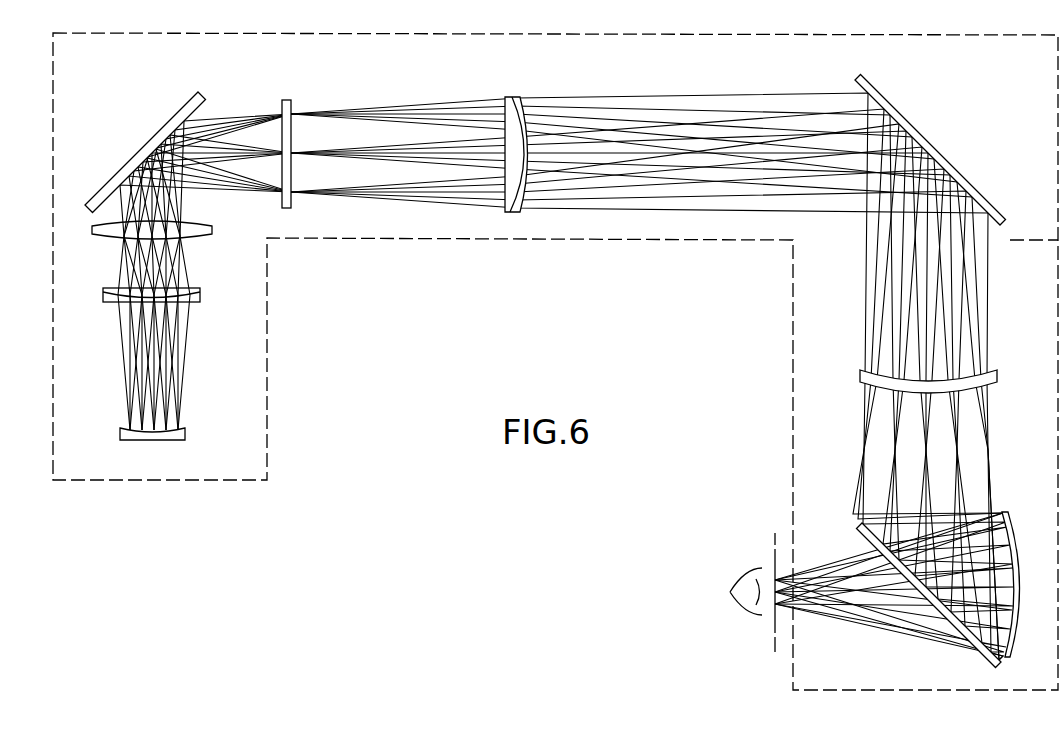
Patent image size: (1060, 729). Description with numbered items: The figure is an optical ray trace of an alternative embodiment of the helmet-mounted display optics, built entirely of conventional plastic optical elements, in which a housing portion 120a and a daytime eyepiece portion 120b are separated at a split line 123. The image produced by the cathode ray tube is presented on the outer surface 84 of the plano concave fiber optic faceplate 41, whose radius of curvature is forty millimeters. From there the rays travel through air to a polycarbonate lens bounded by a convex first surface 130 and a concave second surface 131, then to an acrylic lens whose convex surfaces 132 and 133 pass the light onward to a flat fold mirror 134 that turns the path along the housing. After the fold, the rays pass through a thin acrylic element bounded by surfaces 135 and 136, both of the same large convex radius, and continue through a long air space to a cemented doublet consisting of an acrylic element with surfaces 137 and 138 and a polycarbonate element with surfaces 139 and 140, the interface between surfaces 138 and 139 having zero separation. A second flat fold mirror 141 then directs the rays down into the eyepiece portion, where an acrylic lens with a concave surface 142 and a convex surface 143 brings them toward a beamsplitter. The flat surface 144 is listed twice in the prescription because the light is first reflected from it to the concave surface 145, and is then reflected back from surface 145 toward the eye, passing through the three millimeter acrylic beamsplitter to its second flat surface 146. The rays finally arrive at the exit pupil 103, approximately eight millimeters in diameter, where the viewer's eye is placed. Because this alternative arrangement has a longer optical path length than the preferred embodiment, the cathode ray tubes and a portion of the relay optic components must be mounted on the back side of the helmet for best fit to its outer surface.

The plano concave fiber optic faceplate 41 is at (138, 441).
The outer surface of fiber optic faceplate 84 is at (180, 430).
The exit pupil 103 is at (773, 552).
The housing portion 120a is at (418, 287).
The daytime eyepiece portion 120b is at (745, 377).
The split line 123 is at (1022, 242).
The convex first surface of polycarbonate lens 130 is at (118, 302).
The concave second surface of polycarbonate lens 131 is at (120, 287).
The convex first surface of acrylic lens 132 is at (200, 238).
The convex second surface of acrylic lens 133 is at (205, 226).
The fold mirror 134 is at (198, 107).
The convex first surface of acrylic plate 135 is at (282, 105).
The convex second surface of acrylic plate 136 is at (291, 106).
The convex first surface of doublet acrylic element 137 is at (504, 186).
The convex second surface of doublet acrylic element 138 is at (522, 133).
The concave first surface of doublet polycarbonate element 139 is at (525, 110).
The convex second surface of doublet polycarbonate element 140 is at (537, 187).
The fold mirror 141 is at (858, 82).
The concave first surface of eyepiece acrylic lens 142 is at (883, 373).
The convex second surface of eyepiece acrylic lens 143 is at (880, 388).
The beamsplitter partially reflective surface 144 is at (877, 522).
The concave combiner surface 145 is at (991, 515).
The beamsplitter exit surface 146 is at (868, 545).